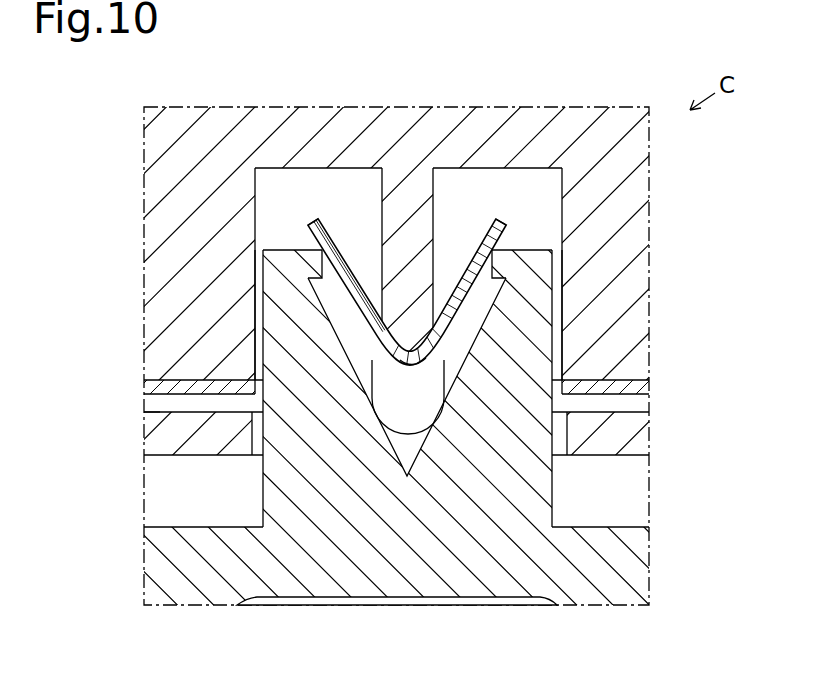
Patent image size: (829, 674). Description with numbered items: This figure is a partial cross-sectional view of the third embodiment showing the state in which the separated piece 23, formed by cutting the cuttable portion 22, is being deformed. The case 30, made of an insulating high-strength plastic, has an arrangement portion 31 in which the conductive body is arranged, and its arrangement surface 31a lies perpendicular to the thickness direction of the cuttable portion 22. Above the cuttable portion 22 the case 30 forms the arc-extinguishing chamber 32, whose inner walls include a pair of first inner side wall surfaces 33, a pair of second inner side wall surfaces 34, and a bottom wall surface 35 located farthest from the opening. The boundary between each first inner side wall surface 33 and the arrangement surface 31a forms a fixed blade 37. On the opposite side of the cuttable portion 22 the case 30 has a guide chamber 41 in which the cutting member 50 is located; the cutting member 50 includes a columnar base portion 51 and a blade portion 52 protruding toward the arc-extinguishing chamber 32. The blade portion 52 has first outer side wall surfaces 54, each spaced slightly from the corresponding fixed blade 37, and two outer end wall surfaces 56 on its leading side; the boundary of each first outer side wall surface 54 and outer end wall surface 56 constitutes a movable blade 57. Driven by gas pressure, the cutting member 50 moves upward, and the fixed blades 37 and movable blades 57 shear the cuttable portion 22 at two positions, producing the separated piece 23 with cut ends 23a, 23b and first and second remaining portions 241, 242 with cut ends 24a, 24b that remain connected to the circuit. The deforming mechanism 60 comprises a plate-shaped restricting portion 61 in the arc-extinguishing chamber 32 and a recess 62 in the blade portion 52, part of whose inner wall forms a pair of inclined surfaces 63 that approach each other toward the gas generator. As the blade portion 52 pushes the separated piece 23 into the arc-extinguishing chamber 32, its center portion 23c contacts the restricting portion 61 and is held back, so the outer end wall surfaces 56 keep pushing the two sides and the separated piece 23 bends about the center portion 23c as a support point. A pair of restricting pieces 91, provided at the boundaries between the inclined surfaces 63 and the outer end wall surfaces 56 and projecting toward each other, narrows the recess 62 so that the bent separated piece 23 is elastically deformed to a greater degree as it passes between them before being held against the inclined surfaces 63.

The case 30 is at (645, 147).
The arc-extinguishing chamber 32 is at (338, 203).
The first inner side wall surfaces 33 is at (255, 168).
The second inner side wall surfaces 34 is at (555, 217).
The bottom wall surface 35 is at (325, 170).
The movable blade 57 is at (263, 251).
The outer end wall surfaces 56 is at (291, 250).
The inclined surfaces 63 is at (343, 343).
The cut end 24a is at (264, 394).
The cut end 24b is at (551, 394).
The separated piece 23 is at (401, 298).
The cut end 23a is at (314, 220).
The cut end 23b is at (503, 224).
The center portion 23c is at (413, 366).
The restricting pieces 91 is at (330, 248).
The deforming mechanism 60 is at (407, 394).
The restricting portion 61 is at (439, 478).
The recess 62 is at (420, 437).
The cuttable portion 22 is at (414, 337).
The first remaining portion 241 is at (252, 381).
The second remaining portion 242 is at (640, 386).
The arrangement portion 31 is at (116, 409).
The arrangement surface 31a is at (146, 401).
The fixed blade 37 is at (254, 368).
The guide chamber 41 is at (198, 505).
The first outer side wall surfaces 54 is at (263, 478).
The cutting member 50 is at (414, 337).
The base portion 51 is at (636, 537).
The blade portion 52 is at (552, 497).